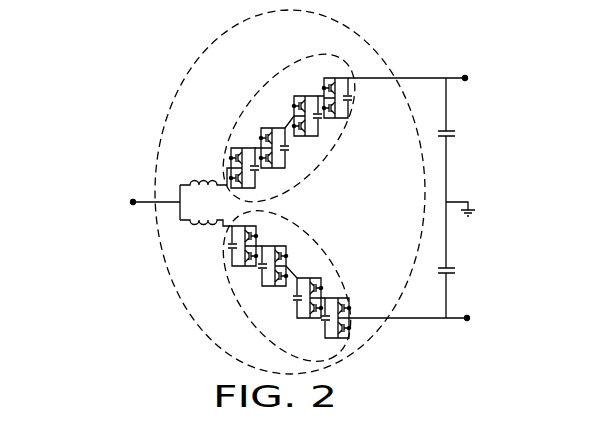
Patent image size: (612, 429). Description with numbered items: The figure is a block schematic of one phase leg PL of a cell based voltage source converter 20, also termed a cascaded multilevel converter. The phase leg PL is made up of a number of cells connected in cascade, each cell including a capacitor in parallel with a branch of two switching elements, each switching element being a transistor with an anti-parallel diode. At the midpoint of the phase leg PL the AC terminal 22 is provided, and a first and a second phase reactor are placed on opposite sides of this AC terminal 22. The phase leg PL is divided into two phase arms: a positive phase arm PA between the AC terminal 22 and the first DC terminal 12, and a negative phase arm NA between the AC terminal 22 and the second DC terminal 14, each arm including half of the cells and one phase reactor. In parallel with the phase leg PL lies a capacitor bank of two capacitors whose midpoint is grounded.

The cell based voltage source converter 20 is at (158, 116).
The AC terminal 22 is at (133, 202).
The first DC terminal 12 is at (465, 78).
The second DC terminal 14 is at (467, 318).
The phase leg PL is at (163, 265).
The positive phase arm PA is at (242, 97).
The negative phase arm NA is at (229, 258).